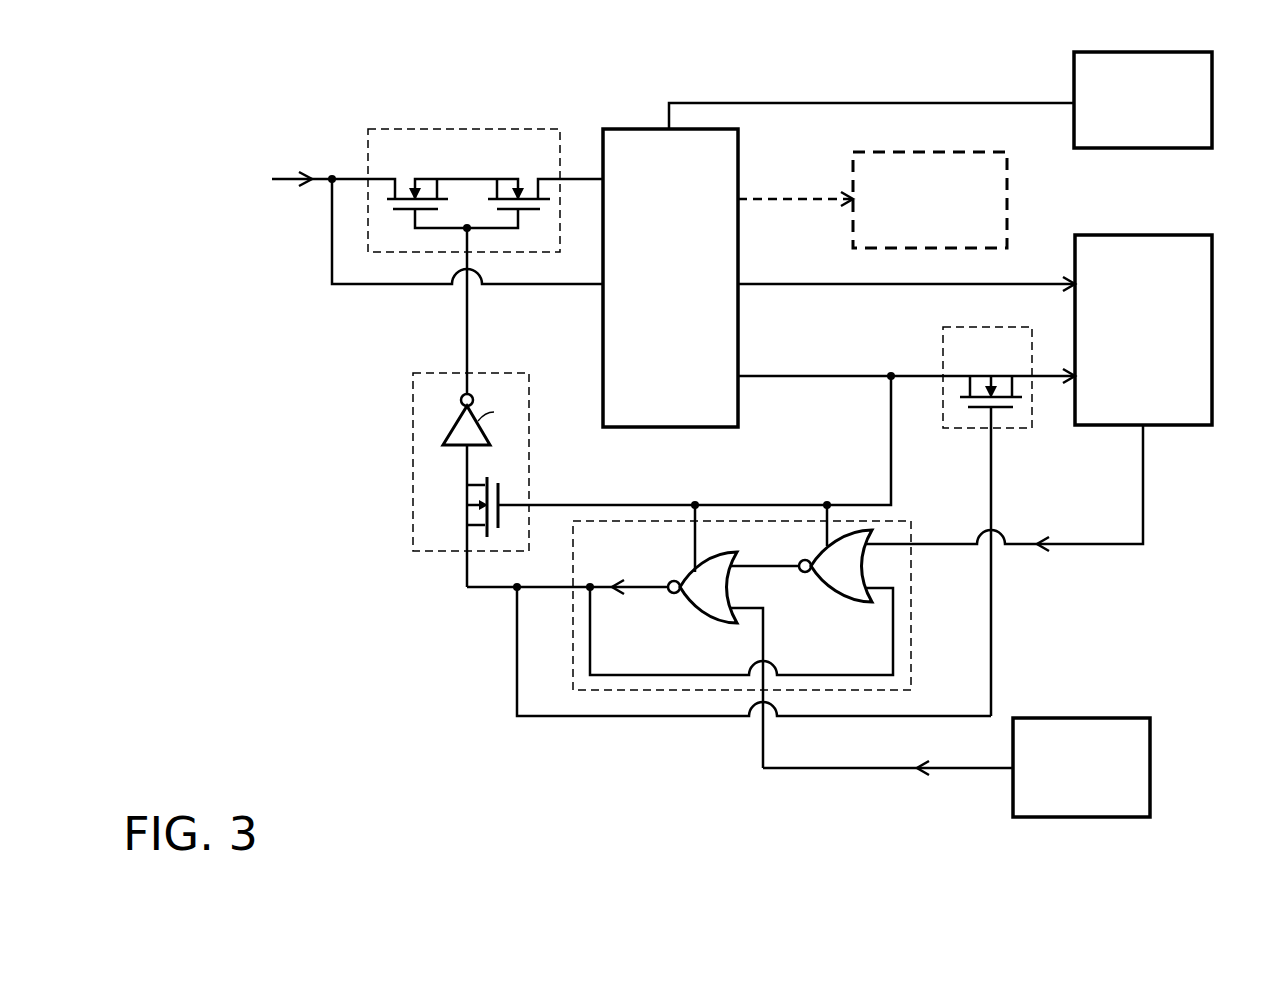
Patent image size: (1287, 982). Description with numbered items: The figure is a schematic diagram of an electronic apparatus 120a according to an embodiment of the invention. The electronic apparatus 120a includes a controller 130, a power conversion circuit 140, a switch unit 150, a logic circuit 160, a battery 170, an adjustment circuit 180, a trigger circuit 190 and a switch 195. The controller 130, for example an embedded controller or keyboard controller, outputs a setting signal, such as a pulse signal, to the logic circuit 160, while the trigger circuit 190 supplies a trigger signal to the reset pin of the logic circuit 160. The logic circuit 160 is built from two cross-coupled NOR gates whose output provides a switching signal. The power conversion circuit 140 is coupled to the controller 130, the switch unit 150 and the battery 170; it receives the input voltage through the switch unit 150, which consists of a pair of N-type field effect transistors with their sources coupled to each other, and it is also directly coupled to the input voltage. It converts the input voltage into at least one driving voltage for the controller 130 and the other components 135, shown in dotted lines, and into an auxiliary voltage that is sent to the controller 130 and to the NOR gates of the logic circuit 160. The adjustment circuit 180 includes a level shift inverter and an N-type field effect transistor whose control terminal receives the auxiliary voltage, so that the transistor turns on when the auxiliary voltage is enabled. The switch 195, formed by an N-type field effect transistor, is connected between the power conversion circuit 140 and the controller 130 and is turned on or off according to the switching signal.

The electronic apparatus 120a is at (1278, 862).
The controller 130 is at (1168, 235).
The other components 135 is at (946, 152).
The power conversion circuit 140 is at (645, 129).
The switch unit 150 is at (367, 155).
The logic circuit 160 is at (911, 648).
The battery 170 is at (1168, 52).
The adjustment circuit 180 is at (498, 373).
The trigger circuit 190 is at (1107, 718).
The switch 195 is at (943, 352).